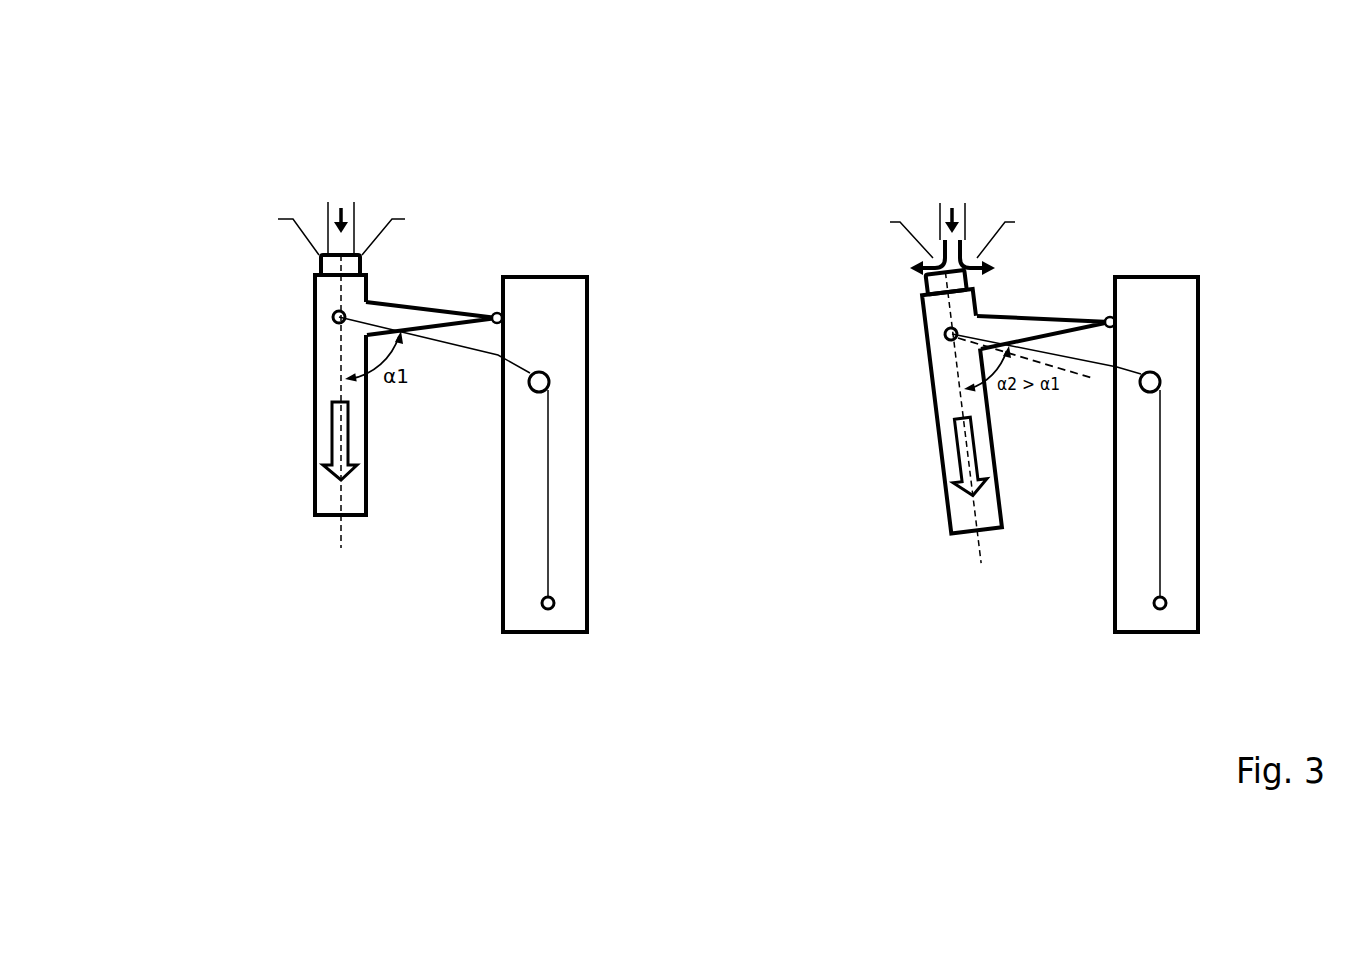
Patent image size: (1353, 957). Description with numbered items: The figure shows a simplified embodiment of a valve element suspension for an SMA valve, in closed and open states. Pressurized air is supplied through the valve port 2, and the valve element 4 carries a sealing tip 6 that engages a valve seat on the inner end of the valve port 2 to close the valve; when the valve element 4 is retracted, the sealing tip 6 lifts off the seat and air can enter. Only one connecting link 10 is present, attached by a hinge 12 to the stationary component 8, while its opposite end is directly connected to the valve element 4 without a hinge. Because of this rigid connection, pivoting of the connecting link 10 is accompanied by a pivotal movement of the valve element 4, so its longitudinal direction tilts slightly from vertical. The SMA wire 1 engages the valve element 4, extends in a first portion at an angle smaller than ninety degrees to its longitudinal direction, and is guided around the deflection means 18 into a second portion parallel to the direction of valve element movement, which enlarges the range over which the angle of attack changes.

The SMA wire 1 is at (490, 355).
The valve port 2 is at (303, 239).
The valve element 4 is at (315, 392).
The sealing tip 6 is at (320, 264).
The stationary component 8 is at (583, 367).
The connecting link 10 is at (375, 300).
The hinge 12 is at (493, 314).
The deflection means 18 is at (548, 388).